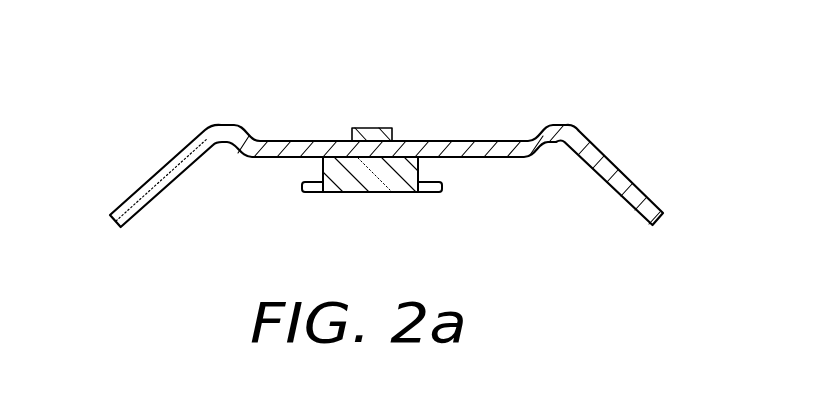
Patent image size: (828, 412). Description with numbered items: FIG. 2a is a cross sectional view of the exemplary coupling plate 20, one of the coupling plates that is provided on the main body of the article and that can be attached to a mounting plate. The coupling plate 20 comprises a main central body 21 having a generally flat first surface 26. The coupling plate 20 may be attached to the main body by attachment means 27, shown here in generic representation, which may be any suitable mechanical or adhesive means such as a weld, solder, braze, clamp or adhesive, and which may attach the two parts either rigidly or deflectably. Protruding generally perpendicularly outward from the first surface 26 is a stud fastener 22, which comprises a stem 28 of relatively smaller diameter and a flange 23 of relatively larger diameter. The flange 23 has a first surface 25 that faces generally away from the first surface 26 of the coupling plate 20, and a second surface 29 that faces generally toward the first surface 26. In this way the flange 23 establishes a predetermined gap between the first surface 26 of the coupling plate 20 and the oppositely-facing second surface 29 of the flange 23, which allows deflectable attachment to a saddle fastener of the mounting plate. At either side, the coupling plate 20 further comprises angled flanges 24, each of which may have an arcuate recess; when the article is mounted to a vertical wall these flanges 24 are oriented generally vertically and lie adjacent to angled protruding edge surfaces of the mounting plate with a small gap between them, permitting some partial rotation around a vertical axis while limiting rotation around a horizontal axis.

The coupling plate 20 is at (171, 61).
The main central body 21 is at (457, 141).
The stud fastener 22 is at (398, 192).
The flange 23 is at (309, 196).
The angled flanges 24 is at (128, 195).
The first surface 25 is at (337, 192).
The first surface 26 is at (492, 158).
The attachment means 27 is at (368, 129).
The stem 28 is at (420, 166).
The second surface 29 is at (321, 182).